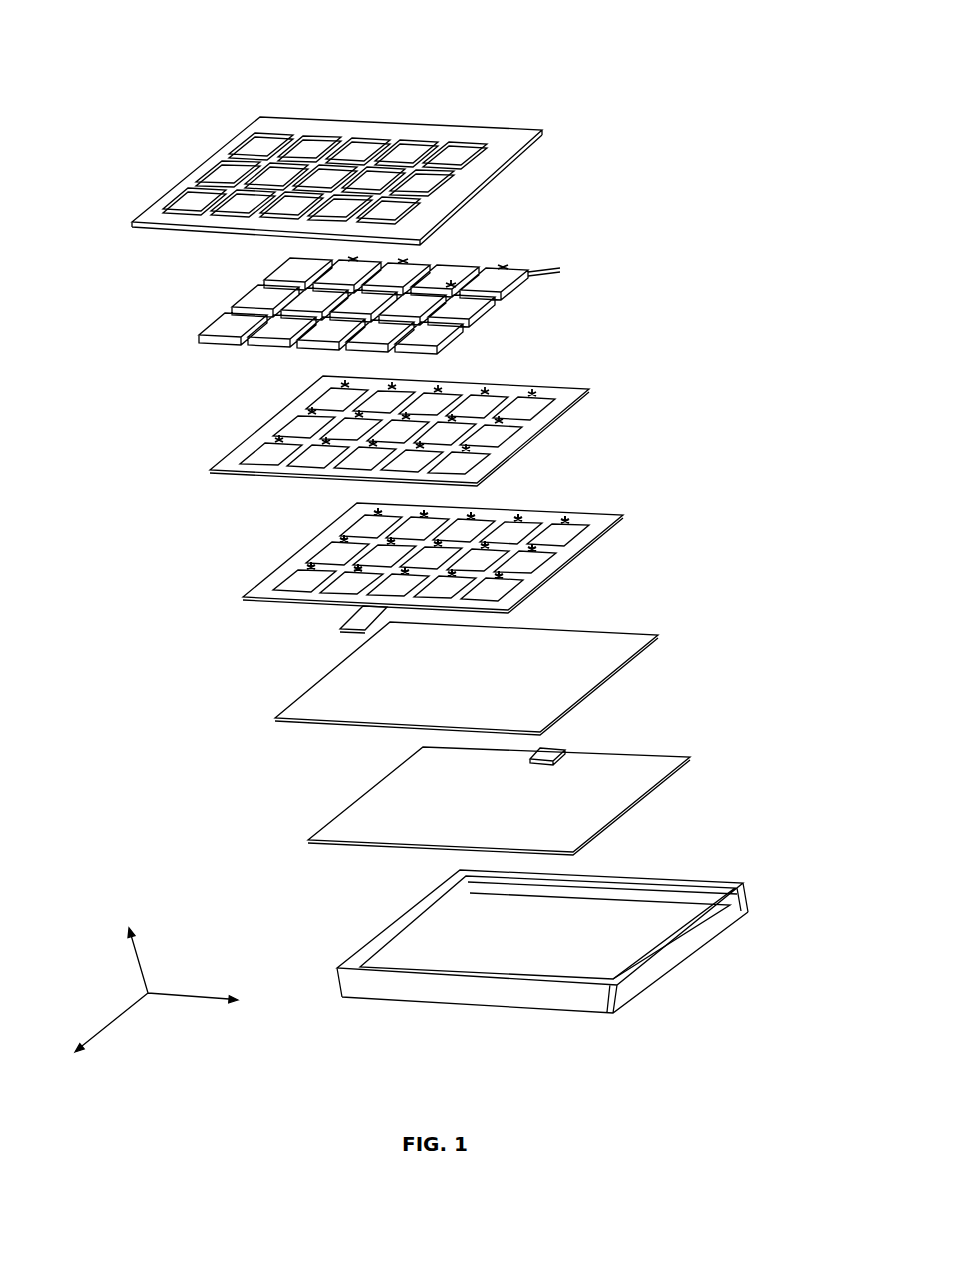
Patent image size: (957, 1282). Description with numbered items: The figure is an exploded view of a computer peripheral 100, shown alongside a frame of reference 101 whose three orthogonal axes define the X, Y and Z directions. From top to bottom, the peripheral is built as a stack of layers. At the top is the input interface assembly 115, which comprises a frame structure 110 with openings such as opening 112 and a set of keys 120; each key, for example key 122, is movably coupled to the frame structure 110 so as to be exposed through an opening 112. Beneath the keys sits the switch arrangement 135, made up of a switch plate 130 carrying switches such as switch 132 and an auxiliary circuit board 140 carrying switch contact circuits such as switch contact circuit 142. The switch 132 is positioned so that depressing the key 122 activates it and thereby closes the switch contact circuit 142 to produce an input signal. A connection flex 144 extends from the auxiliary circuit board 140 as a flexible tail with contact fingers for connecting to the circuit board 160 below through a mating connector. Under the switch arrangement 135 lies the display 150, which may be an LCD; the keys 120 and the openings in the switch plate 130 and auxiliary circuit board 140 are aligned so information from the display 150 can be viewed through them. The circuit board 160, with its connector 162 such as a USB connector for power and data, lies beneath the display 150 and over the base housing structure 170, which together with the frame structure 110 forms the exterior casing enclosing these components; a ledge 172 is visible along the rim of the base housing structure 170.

The computer peripheral 100 is at (112, 86).
The frame of reference 101 is at (170, 1035).
The frame structure 110 is at (562, 153).
The opening 112 is at (428, 150).
The input interface assembly 115 is at (125, 180).
The set of keys 120 is at (581, 283).
The key 122 is at (452, 283).
The switch plate 130 is at (605, 397).
The switch 132 is at (526, 393).
The switch arrangement 135 is at (210, 455).
The auxiliary circuit board 140 is at (622, 528).
The switch contact circuit 142 is at (540, 527).
The connection flex 144 is at (342, 622).
The display 150 is at (668, 646).
The circuit board 160 is at (697, 778).
The connector 162 is at (567, 752).
The base housing structure 170 is at (673, 970).
The housing ledge 172 is at (600, 878).